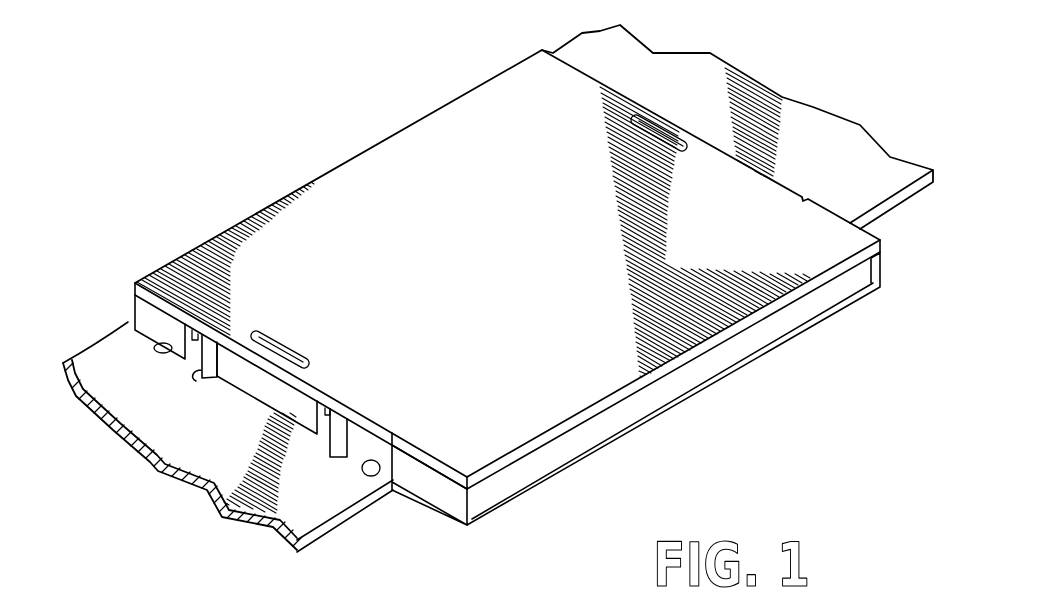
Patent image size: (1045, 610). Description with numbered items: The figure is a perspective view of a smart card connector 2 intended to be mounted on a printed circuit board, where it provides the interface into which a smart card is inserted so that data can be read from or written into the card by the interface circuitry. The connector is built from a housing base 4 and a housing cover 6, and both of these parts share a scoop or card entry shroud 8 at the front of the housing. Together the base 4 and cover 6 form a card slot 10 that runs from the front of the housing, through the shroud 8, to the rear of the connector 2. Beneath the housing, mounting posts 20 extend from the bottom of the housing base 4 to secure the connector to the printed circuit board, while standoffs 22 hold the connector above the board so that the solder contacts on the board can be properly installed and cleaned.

The smart card connector 2 is at (238, 142).
The housing base 4 is at (383, 432).
The housing cover 6 is at (404, 160).
The card entry shroud 8 is at (828, 233).
The card slot 10 is at (648, 396).
The mounting posts 20 is at (202, 372).
The standoffs 22 is at (150, 352).